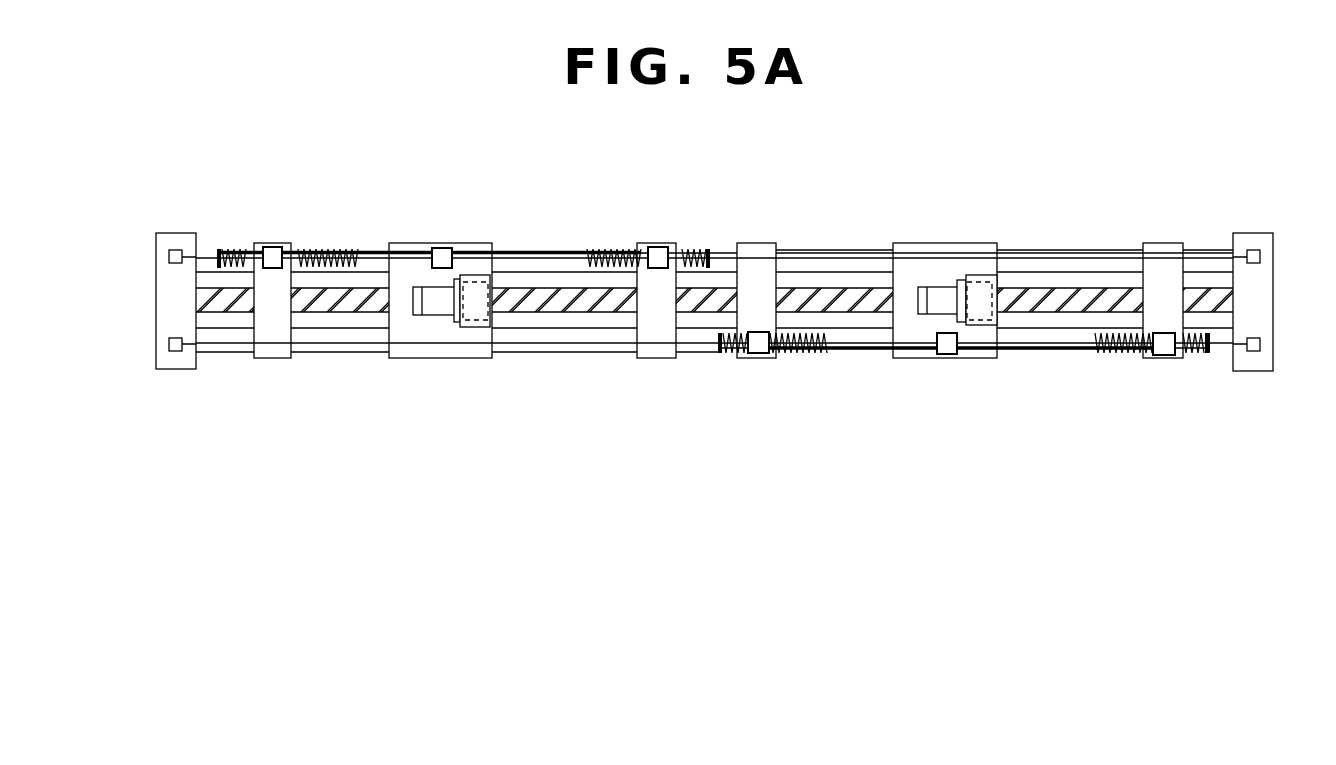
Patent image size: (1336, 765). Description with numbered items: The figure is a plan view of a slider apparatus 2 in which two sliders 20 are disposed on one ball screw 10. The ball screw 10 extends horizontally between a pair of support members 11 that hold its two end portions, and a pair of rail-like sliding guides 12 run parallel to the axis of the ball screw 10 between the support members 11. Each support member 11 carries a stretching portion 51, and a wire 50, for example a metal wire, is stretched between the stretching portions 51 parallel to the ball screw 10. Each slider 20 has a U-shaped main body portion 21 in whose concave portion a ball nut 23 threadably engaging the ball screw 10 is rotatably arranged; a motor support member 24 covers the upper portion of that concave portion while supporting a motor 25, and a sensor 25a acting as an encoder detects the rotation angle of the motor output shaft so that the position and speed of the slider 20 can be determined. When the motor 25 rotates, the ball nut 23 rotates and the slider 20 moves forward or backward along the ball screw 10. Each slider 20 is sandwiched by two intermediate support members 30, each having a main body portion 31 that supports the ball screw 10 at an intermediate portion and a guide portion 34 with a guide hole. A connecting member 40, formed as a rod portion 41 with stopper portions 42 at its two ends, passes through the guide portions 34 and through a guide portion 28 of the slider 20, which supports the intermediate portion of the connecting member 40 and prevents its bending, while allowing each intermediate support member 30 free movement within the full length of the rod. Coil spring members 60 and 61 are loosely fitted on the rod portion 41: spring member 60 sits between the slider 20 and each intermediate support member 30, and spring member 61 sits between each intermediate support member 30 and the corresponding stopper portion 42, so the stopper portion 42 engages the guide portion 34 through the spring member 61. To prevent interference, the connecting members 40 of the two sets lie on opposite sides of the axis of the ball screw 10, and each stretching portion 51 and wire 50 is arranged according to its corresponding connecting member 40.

The slider apparatus 2 is at (140, 228).
The ball screw 10 is at (1230, 300).
The support member 11 is at (156, 300).
The sliding guide 12 is at (330, 352).
The slider 20 is at (681, 343).
The main body portion 21 is at (397, 358).
The ball nut 23 is at (481, 282).
The motor support member 24 is at (457, 280).
The motor 25 is at (661, 296).
The sensor 25a is at (417, 317).
The guide portion 28 is at (440, 248).
The intermediate support member 30 is at (710, 298).
The main body portion 31 is at (276, 358).
The guide portion 34 is at (272, 247).
The connecting member 40 is at (550, 252).
The rod portion 41 is at (567, 257).
The stopper portion 42 is at (218, 250).
The wire 50 is at (575, 352).
The stretching portion 51 is at (169, 257).
The spring member 60 is at (324, 250).
The spring member 61 is at (236, 250).